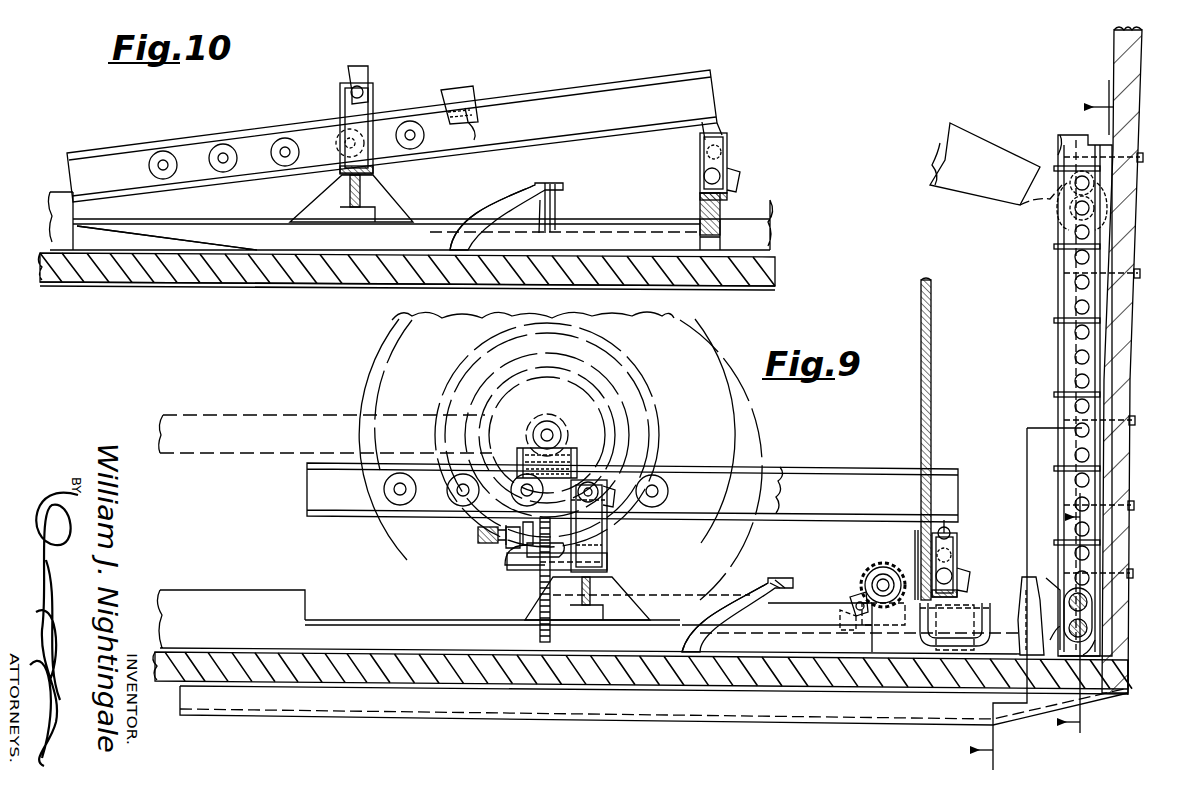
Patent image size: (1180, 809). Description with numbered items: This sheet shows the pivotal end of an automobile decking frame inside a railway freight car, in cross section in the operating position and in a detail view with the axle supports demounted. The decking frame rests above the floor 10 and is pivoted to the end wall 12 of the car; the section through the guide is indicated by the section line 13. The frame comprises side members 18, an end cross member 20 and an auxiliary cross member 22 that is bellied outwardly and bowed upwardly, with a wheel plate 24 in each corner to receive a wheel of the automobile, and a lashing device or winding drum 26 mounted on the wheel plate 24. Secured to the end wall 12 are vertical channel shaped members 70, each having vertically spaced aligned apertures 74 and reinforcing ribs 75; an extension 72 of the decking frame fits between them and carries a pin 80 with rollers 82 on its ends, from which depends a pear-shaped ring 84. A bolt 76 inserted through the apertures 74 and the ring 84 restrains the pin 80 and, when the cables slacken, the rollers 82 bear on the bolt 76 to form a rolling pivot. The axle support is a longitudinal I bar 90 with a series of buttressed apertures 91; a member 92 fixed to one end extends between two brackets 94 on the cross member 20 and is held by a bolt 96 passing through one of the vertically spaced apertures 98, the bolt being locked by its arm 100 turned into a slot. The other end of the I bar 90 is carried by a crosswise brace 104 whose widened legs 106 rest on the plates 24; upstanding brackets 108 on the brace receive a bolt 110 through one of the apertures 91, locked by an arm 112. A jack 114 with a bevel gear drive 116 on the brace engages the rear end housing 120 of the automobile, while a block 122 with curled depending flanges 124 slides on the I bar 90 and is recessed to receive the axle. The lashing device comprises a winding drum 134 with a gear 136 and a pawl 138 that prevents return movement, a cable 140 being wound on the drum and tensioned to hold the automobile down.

In FIG. 10, the floor 10 is at (780, 276).
In FIG. 9, the floor 10 is at (153, 652).
In FIG. 9, the end wall 12 is at (1113, 44).
In FIG. 9, the section line 13 is at (1095, 510).
In FIG. 10, the side member 18 is at (770, 245).
In FIG. 9, the side member 18 is at (230, 590).
In FIG. 10, the end cross member 20 is at (720, 210).
In FIG. 10, the auxiliary cross member 22 is at (563, 184).
In FIG. 9, the auxiliary cross member 22 is at (771, 582).
In FIG. 10, the wheel plate 24 is at (234, 219).
In FIG. 9, the wheel plate 24 is at (364, 620).
In FIG. 9, the winding drum 26 is at (862, 556).
In FIG. 9, the channel shaped member 70 is at (1070, 290).
In FIG. 9, the extension 72 is at (1048, 600).
In FIG. 9, the apertures 74 is at (1070, 332).
In FIG. 9, the reinforcing ribs 75 is at (1058, 400).
In FIG. 9, the bolt 76 is at (1092, 624).
In FIG. 9, the pin 80 is at (1092, 600).
In FIG. 9, the rollers 82 is at (1060, 586).
In FIG. 9, the ring 84 is at (1096, 636).
In FIG. 10, the I bar 90 is at (628, 86).
In FIG. 9, the I bar 90 is at (758, 466).
In FIG. 10, the apertures 91 is at (223, 158).
In FIG. 9, the apertures 91 is at (400, 492).
In FIG. 10, the member 92 is at (705, 124).
In FIG. 9, the member 92 is at (948, 530).
In FIG. 10, the bracket 94 is at (729, 142).
In FIG. 9, the bracket 94 is at (956, 541).
In FIG. 10, the bolt 96 is at (700, 172).
In FIG. 9, the bolt 96 is at (958, 552).
In FIG. 10, the apertures 98 is at (700, 135).
In FIG. 9, the apertures 98 is at (948, 528).
In FIG. 10, the arm 100 is at (738, 178).
In FIG. 9, the arm 100 is at (959, 579).
In FIG. 10, the brace 104 is at (376, 204).
In FIG. 9, the brace 104 is at (636, 592).
In FIG. 10, the legs 106 is at (348, 180).
In FIG. 9, the legs 106 is at (601, 604).
In FIG. 10, the brackets 108 is at (342, 105).
In FIG. 9, the brackets 108 is at (603, 546).
In FIG. 10, the bolt 110 is at (350, 90).
In FIG. 9, the bolt 110 is at (589, 482).
In FIG. 10, the arm 112 is at (368, 72).
In FIG. 9, the arm 112 is at (609, 496).
In FIG. 9, the jack 114 is at (532, 560).
In FIG. 9, the bevel gear drive 116 is at (516, 558).
In FIG. 9, the rear end housing 120 is at (632, 360).
In FIG. 10, the block 122 is at (445, 82).
In FIG. 9, the block 122 is at (530, 425).
In FIG. 10, the depending flanges 124 is at (478, 122).
In FIG. 9, the depending flanges 124 is at (523, 483).
In FIG. 9, the winding drum 134 is at (915, 530).
In FIG. 9, the gear 136 is at (888, 562).
In FIG. 9, the pawl 138 is at (854, 598).
In FIG. 9, the cable 140 is at (932, 378).